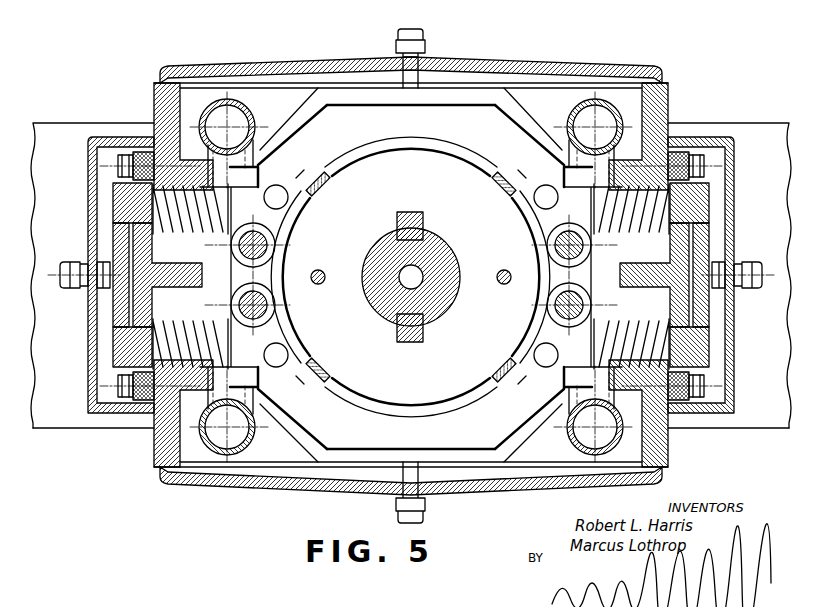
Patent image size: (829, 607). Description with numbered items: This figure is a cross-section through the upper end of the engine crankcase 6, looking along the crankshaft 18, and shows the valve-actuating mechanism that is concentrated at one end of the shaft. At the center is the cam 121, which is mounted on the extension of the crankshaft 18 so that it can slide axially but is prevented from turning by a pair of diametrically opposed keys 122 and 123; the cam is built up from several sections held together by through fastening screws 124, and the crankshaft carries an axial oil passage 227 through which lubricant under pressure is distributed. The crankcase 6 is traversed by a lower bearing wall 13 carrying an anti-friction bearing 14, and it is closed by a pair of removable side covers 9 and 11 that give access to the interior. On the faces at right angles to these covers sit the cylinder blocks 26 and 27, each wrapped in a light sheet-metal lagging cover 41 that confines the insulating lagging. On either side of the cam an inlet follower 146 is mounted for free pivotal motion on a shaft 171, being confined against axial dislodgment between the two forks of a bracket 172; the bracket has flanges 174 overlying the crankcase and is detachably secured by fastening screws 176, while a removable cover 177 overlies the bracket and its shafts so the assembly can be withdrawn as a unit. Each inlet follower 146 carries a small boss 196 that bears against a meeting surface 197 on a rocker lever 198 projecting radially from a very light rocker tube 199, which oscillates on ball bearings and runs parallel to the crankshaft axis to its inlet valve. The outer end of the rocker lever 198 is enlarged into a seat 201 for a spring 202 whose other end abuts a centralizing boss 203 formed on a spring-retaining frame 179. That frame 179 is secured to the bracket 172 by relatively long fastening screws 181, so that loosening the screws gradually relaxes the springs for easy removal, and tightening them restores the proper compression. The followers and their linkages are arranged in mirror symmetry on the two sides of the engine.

The crankcase 6 is at (672, 463).
The side cover 9 is at (275, 67).
The side cover 11 is at (303, 490).
The lower bearing wall 13 is at (478, 107).
The anti-friction bearing 14 is at (360, 145).
The hub 18 is at (444, 247).
The cylinder block 26 is at (93, 112).
The cylinder block 27 is at (740, 117).
The lagging cover 41 is at (78, 429).
The cam 121 is at (414, 147).
The key 122 is at (422, 219).
The key 123 is at (425, 337).
The through fastening screw 124 is at (318, 284).
The inlet follower 146 is at (305, 172).
The shaft 171 is at (246, 250).
The bracket 172 is at (140, 305).
The flange 174 is at (136, 152).
The fastening screw 176 is at (118, 165).
The removable cover 177 is at (92, 236).
The frame 179 is at (121, 325).
The fastening screw 181 is at (106, 288).
The boss 196 is at (311, 176).
The meeting surface 197 is at (262, 150).
The rocker lever 198 is at (222, 152).
The rocker tube 199 is at (203, 118).
The seat 201 is at (264, 240).
The spring 202 is at (194, 234).
The centralizing boss 203 is at (113, 198).
The axial oil passage 227 is at (403, 285).